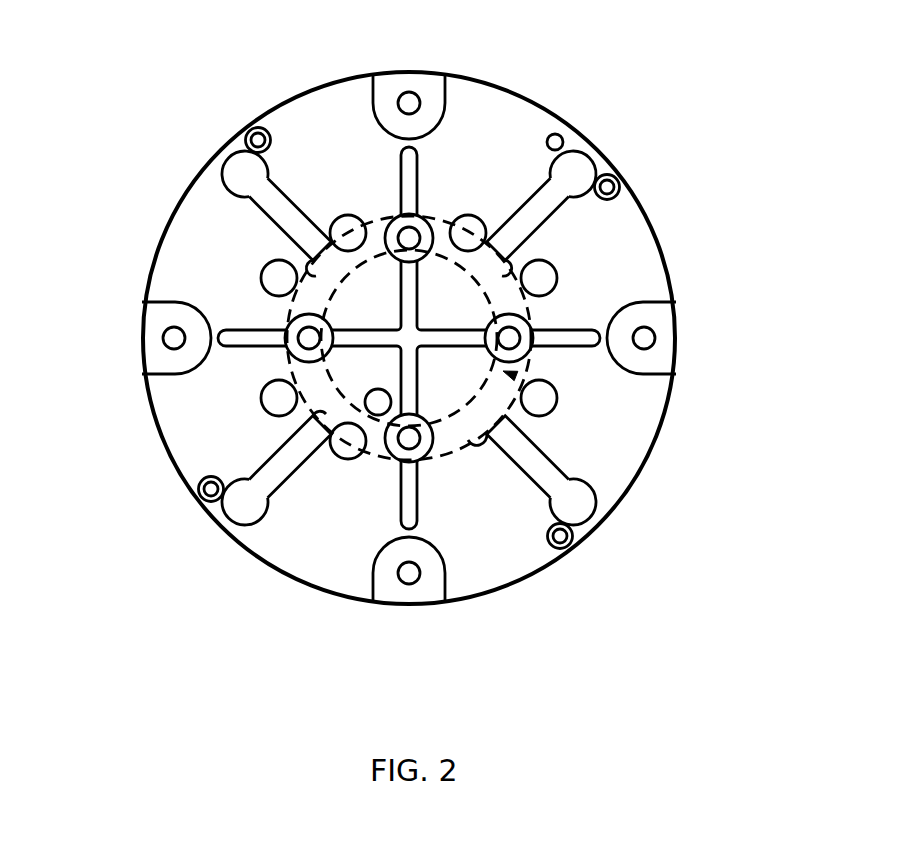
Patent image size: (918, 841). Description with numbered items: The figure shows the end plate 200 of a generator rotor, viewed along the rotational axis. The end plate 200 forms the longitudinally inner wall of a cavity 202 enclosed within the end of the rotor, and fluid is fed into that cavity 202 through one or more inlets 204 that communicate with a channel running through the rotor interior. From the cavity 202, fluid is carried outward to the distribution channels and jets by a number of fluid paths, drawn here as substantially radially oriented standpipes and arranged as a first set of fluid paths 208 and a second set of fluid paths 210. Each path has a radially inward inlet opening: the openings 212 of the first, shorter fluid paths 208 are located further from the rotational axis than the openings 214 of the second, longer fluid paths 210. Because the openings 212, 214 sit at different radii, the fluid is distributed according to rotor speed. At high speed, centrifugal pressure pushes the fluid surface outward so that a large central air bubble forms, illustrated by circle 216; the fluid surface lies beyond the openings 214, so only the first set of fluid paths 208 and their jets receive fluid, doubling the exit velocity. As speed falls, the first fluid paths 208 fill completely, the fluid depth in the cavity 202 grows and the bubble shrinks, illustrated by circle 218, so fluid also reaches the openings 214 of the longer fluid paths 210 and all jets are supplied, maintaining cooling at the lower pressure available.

The end plate 200 is at (648, 213).
The cavity 202 is at (515, 376).
The inlets 204 is at (348, 216).
The first set of fluid paths 208 is at (614, 178).
The second set of fluid paths 210 is at (230, 162).
The inlet openings of the first set of fluid paths 212 is at (510, 270).
The inlet openings of the second set of fluid paths 214 is at (312, 272).
The circle illustrating air bubble at high speed 216 is at (430, 222).
The circle illustrating air bubble at reduced speed 218 is at (452, 421).